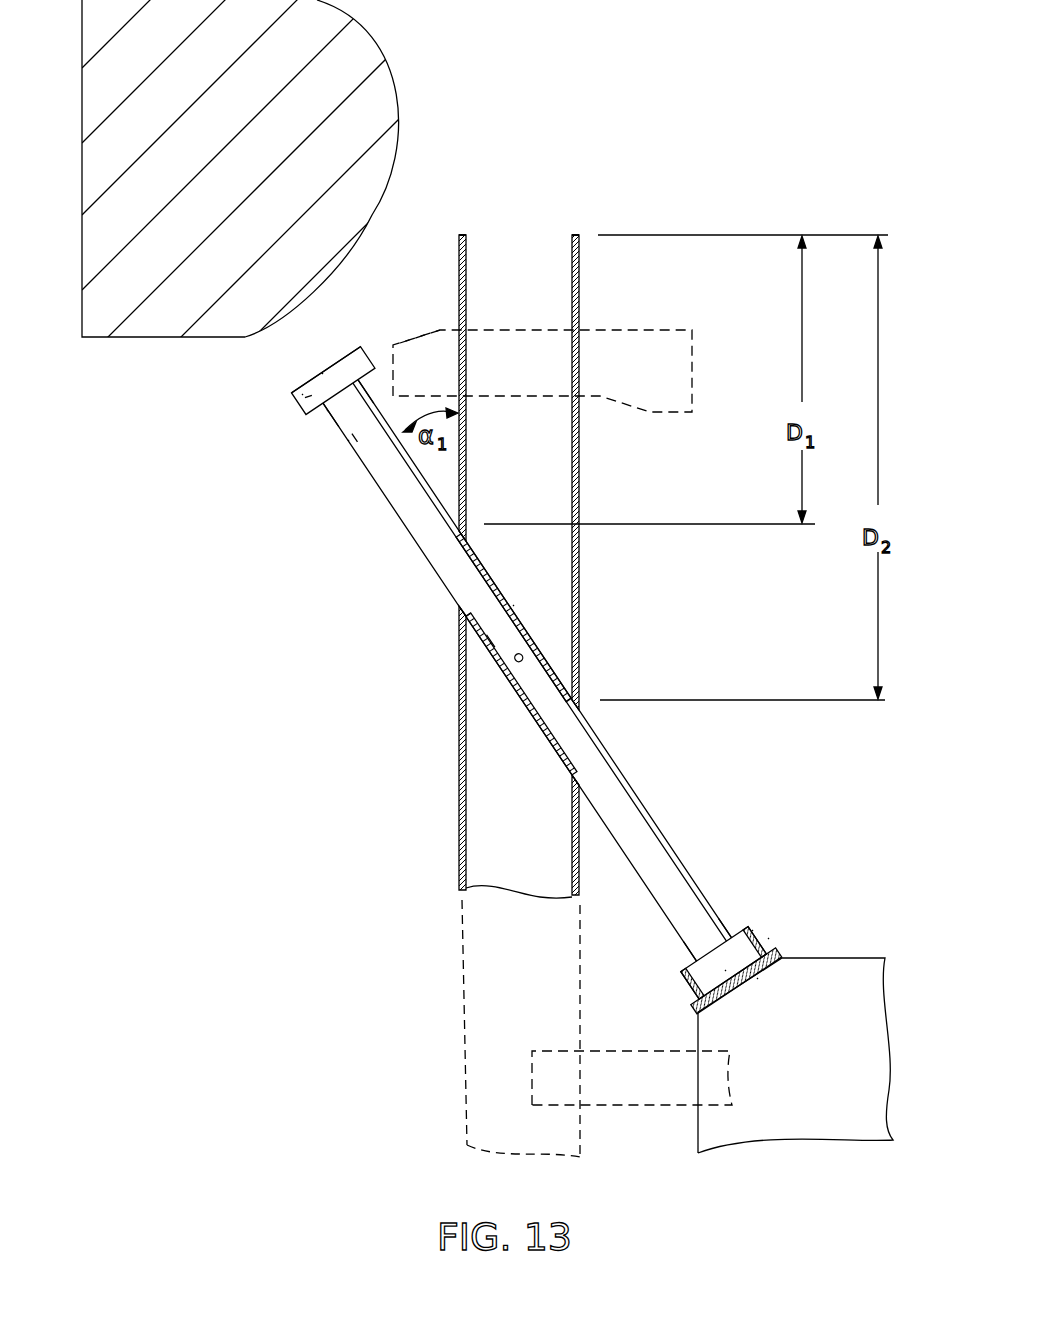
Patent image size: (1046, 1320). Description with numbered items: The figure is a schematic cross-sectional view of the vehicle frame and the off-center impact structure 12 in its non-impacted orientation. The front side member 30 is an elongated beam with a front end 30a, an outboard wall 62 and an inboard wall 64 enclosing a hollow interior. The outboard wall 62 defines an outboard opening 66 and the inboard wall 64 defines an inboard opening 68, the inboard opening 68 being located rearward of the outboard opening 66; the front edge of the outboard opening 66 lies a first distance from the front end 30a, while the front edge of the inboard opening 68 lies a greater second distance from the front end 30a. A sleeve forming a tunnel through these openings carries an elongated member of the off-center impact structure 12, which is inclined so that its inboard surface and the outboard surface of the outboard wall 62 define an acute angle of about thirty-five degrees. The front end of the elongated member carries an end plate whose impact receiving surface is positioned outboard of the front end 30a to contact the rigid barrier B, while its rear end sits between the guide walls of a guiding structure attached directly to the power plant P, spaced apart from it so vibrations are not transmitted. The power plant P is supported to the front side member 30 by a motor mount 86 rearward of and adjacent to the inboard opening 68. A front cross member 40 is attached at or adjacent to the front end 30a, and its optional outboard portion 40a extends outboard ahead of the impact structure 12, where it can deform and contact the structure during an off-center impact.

The rigid barrier B is at (337, 68).
The power plant P is at (836, 1042).
The off-center impact structure 12 is at (532, 689).
The front side member 30 is at (521, 676).
The front end 30a is at (536, 235).
The front cross member 40 is at (697, 350).
The outboard portion 40a is at (411, 340).
The outboard wall 62 is at (459, 735).
The inboard wall 64 is at (581, 580).
The outboard opening 66 is at (463, 620).
The inboard opening 68 is at (580, 698).
The motor mount 86 is at (650, 1107).